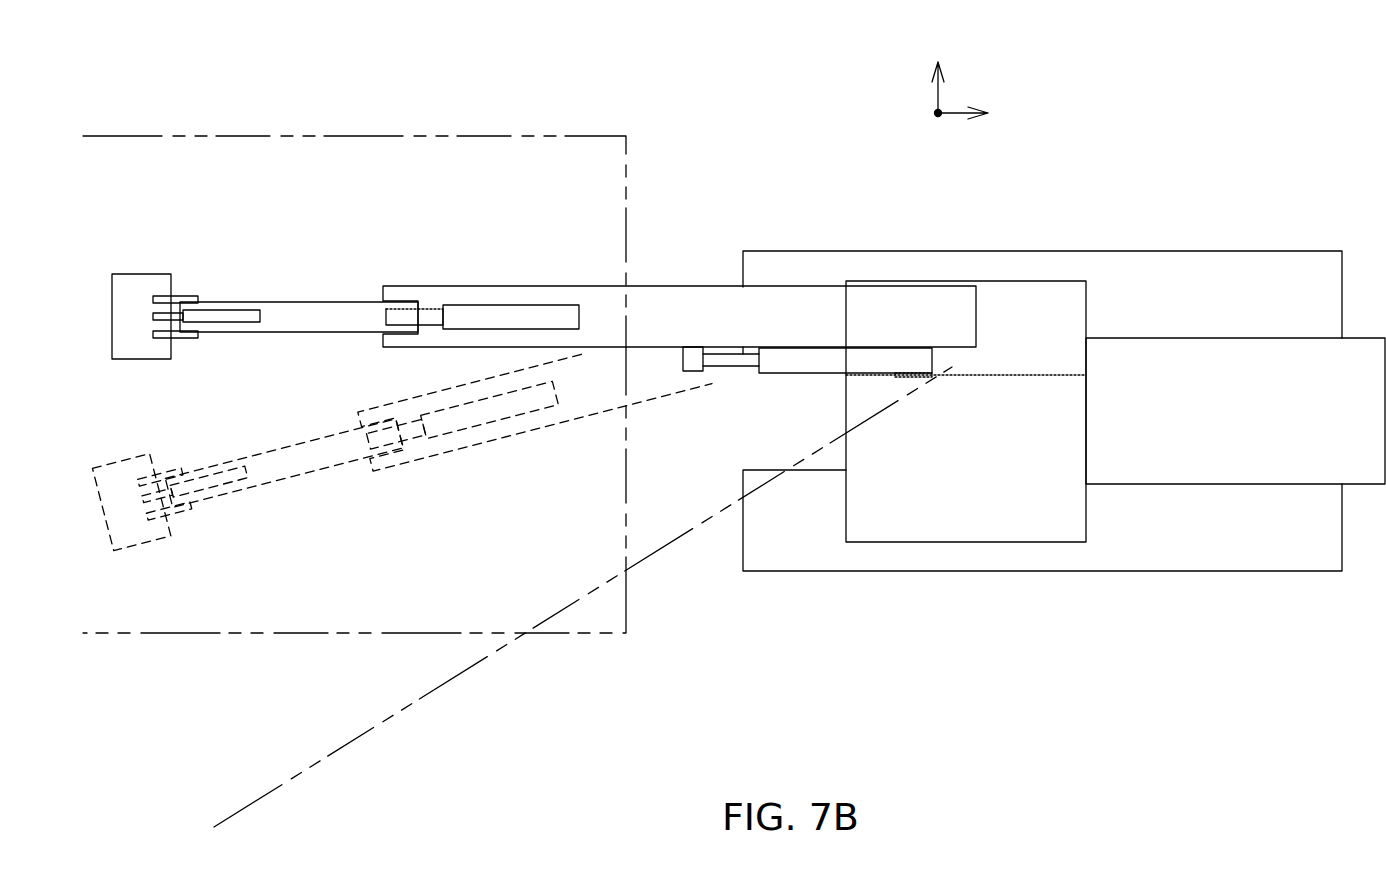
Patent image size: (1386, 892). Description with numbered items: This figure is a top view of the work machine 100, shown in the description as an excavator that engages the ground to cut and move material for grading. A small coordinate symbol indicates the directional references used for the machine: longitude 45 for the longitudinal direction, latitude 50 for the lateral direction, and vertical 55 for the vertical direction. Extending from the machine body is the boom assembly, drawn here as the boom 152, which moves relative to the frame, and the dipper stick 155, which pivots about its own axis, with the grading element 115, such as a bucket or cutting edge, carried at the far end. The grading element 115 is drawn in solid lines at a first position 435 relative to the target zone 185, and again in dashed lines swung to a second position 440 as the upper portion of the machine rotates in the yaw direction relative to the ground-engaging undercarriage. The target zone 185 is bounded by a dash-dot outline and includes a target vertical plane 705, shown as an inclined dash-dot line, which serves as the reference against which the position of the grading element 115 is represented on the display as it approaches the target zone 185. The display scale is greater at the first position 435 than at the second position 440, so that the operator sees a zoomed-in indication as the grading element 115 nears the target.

The work machine 100 is at (1138, 117).
The grading element 115 is at (134, 288).
The boom 152 is at (685, 312).
The dipper stick 155 is at (317, 315).
The target zone 185 is at (315, 561).
The first position 435 is at (187, 269).
The second position 440 is at (168, 456).
The target vertical plane 705 is at (348, 747).
The longitude 45 is at (965, 108).
The latitude 50 is at (930, 88).
The vertical 55 is at (937, 122).